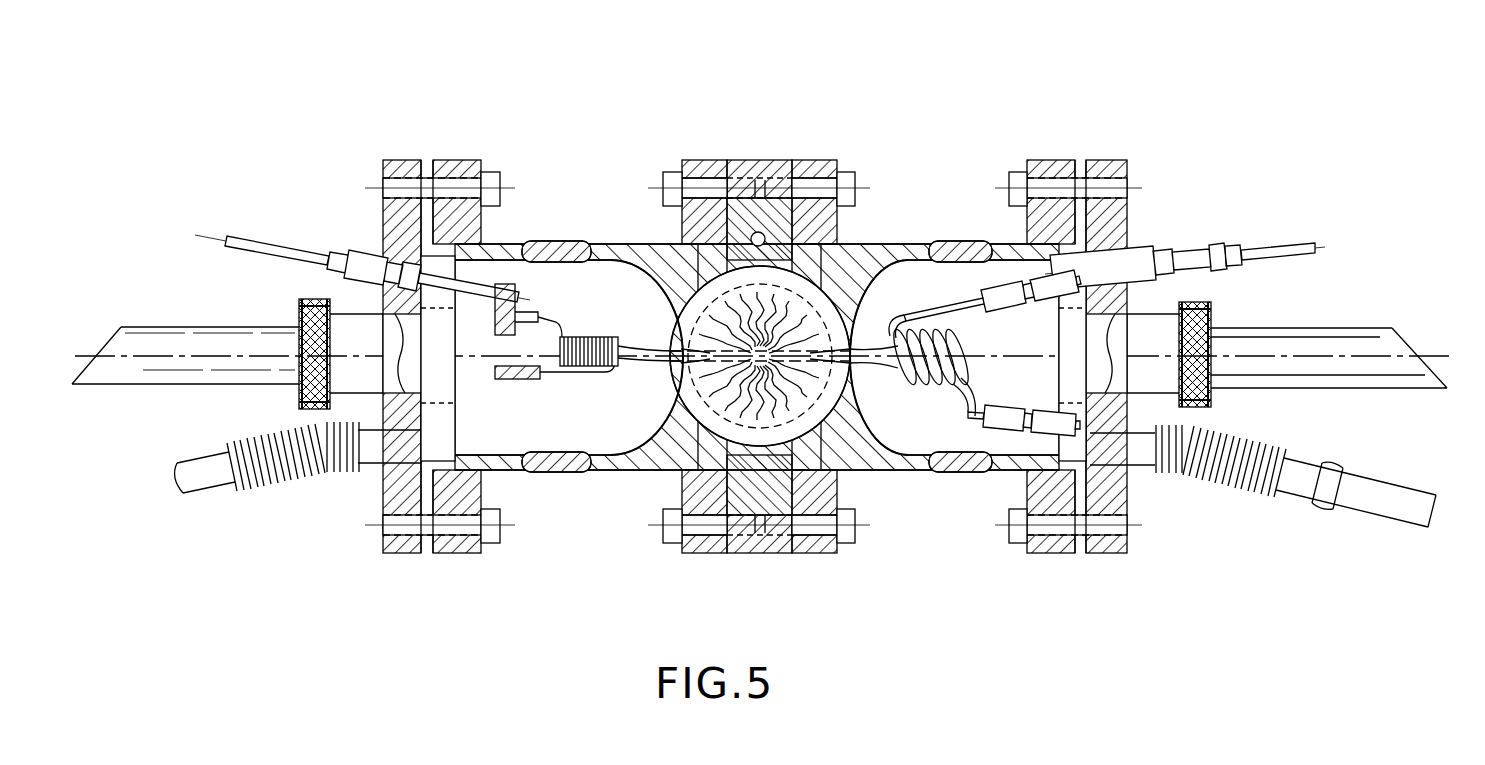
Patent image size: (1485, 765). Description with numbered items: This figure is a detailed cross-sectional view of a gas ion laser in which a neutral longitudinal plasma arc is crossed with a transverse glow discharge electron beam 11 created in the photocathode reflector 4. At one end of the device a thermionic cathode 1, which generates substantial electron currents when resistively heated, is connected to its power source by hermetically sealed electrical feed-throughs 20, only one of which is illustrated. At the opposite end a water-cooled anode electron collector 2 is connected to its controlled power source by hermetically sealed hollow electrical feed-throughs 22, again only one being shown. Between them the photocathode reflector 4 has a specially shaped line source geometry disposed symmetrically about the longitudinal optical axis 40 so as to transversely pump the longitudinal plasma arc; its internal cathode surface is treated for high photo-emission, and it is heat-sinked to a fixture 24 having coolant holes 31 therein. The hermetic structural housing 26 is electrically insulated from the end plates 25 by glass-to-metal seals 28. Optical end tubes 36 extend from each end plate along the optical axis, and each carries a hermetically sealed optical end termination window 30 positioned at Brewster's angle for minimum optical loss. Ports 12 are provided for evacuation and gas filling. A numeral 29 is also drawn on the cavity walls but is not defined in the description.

The thermionic cathode 1 is at (573, 336).
The anode electron collector 2 is at (905, 395).
The photocathode reflector 4 is at (698, 343).
The transverse glow discharge electron beam 11 is at (799, 304).
The ports 12 is at (274, 482).
The hermetically sealed electrical feed-throughs 20 is at (350, 250).
The hermetically sealed hollow electrical feed-throughs 22 is at (1309, 244).
The fixture 24 is at (675, 490).
The end plates 25 is at (408, 158).
The hermetic structural housing 26 is at (1010, 243).
The glass-to-metal seals 28 is at (580, 243).
The cavity wall 29 is at (640, 470).
The optical end termination window 30 is at (100, 348).
The coolant holes 31 is at (770, 258).
The optical end tubes 36 is at (193, 386).
The longitudinal optical axis 40 is at (78, 356).